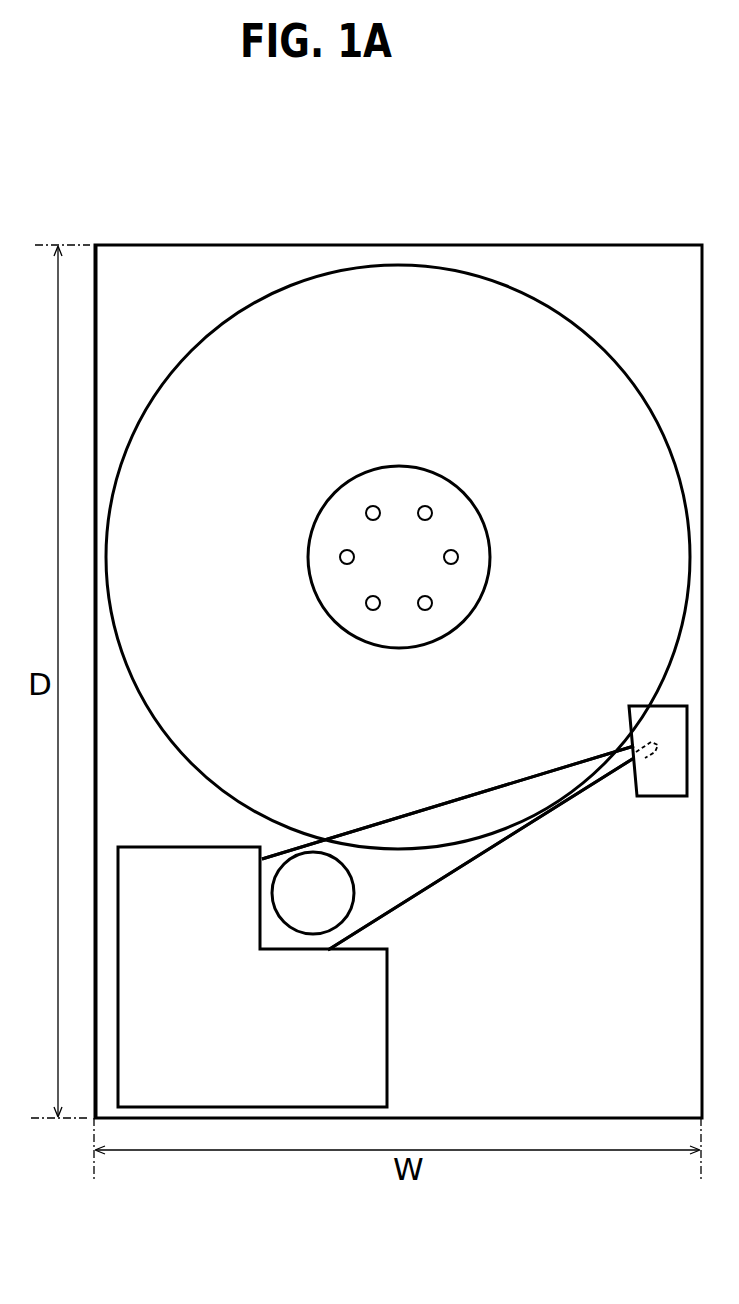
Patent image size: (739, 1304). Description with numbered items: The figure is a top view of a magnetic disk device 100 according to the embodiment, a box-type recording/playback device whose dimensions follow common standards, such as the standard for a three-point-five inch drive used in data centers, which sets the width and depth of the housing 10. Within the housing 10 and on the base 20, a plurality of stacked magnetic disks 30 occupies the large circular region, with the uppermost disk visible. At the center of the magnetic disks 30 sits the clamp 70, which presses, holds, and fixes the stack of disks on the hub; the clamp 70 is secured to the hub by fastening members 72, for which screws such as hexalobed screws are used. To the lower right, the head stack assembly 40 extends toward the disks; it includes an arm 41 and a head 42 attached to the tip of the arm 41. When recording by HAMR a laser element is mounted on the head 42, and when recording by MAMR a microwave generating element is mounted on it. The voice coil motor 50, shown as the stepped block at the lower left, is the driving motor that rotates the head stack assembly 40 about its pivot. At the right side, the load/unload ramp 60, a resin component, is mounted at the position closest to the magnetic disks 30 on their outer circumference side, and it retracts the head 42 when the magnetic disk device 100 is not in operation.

The magnetic disk device 100 is at (665, 111).
The housing 10 is at (255, 245).
The base 20 is at (165, 305).
The magnetic disks 30 is at (535, 330).
The clamp 70 is at (362, 503).
The fastening member 72 is at (425, 503).
The load/unload ramp 60 is at (670, 720).
The head stack assembly 40 is at (438, 847).
The arm 41 is at (535, 797).
The head 42 is at (655, 752).
The voice coil motor 50 is at (255, 1036).